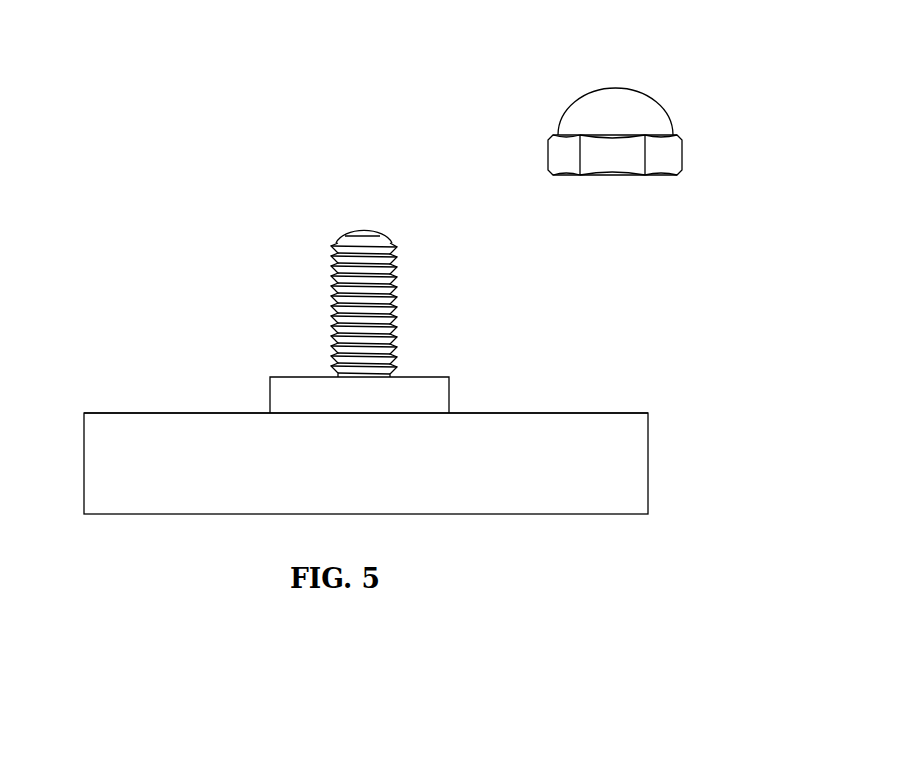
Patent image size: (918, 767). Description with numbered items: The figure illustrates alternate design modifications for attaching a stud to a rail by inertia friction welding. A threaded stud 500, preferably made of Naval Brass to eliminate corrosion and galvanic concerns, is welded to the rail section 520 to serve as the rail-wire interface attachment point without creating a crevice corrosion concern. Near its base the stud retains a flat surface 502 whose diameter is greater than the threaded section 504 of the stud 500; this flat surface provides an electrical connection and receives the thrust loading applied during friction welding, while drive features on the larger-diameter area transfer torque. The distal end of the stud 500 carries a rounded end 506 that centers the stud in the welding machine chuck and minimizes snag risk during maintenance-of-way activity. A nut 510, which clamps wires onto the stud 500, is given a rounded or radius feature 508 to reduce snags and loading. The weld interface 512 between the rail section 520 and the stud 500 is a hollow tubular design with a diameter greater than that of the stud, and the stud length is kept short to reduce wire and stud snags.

The threaded stud 500 is at (364, 275).
The flat surface 502 is at (297, 377).
The threaded section 504 is at (330, 292).
The rounded end 506 is at (365, 228).
The rounded or radius feature 508 is at (615, 92).
The nut 510 is at (687, 124).
The weld interface 512 is at (293, 412).
The rail section 520 is at (386, 480).